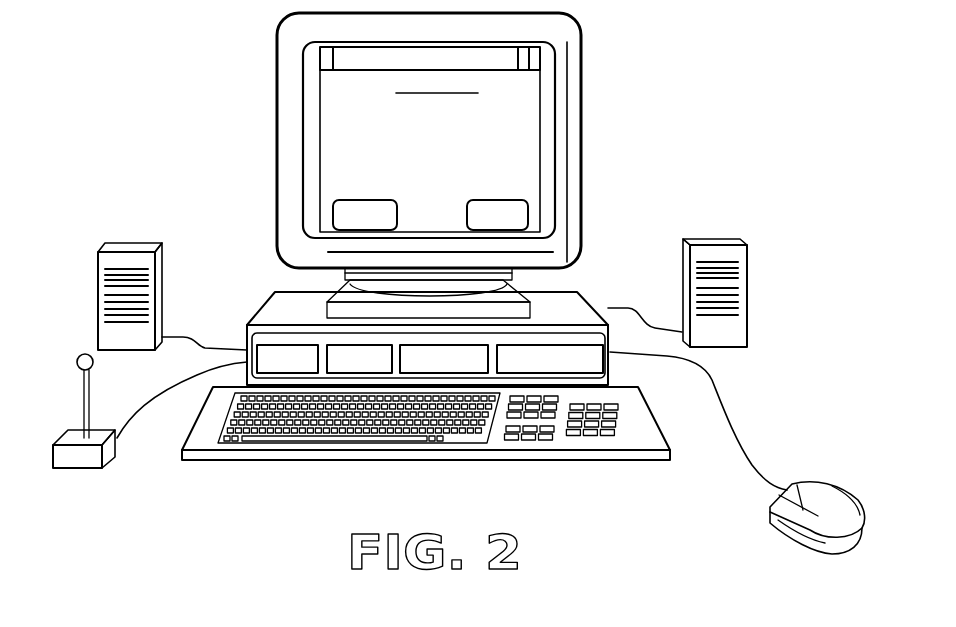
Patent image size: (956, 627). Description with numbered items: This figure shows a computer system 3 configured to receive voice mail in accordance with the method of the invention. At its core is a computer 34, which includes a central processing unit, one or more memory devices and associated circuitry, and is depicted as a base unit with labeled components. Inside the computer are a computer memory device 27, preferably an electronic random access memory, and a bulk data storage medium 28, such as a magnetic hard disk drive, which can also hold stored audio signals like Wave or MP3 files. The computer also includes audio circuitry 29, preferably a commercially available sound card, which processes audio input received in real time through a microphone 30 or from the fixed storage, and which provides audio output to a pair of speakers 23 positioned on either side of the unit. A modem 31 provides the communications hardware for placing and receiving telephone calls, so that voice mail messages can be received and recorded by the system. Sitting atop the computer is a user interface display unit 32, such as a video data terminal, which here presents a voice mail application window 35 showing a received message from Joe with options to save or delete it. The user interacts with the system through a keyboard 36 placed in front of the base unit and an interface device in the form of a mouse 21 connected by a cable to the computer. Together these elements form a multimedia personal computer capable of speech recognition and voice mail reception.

The computer system 3 is at (150, 102).
The mouse 21 is at (770, 505).
The speakers 23 is at (122, 244).
The computer memory device 27 is at (270, 376).
The bulk data storage medium 28 is at (375, 376).
The audio circuitry 29 is at (478, 376).
The microphone 30 is at (78, 468).
The modem 31 is at (565, 376).
The user interface display unit 32 is at (277, 50).
The computer 34 is at (257, 323).
The voice mail message display 35 is at (533, 130).
The keyboard 36 is at (450, 461).